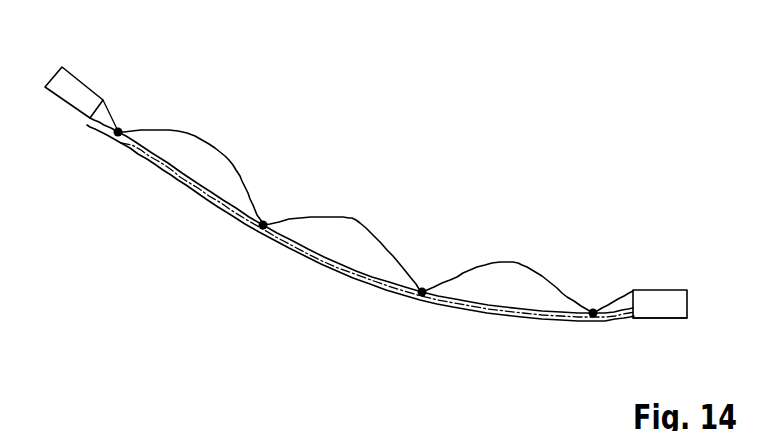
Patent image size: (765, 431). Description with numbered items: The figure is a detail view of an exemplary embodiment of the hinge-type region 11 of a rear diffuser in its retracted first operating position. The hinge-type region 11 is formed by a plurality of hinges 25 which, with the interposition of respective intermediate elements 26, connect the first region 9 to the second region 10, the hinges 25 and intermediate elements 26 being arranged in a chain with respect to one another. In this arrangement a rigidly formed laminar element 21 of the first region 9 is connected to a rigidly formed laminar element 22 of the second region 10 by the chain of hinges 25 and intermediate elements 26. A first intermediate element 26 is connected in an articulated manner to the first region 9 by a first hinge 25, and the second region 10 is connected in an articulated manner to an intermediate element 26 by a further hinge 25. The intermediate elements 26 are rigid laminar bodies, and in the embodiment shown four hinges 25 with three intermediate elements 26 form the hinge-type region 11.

The second region 10 is at (83, 90).
The rigidly formed laminar element 22 is at (62, 102).
The first region 9 is at (648, 300).
The rigidly formed laminar element 21 is at (663, 305).
The hinges 25 is at (120, 128).
The intermediate elements 26 is at (210, 157).
The hinge-type region 11 is at (443, 133).